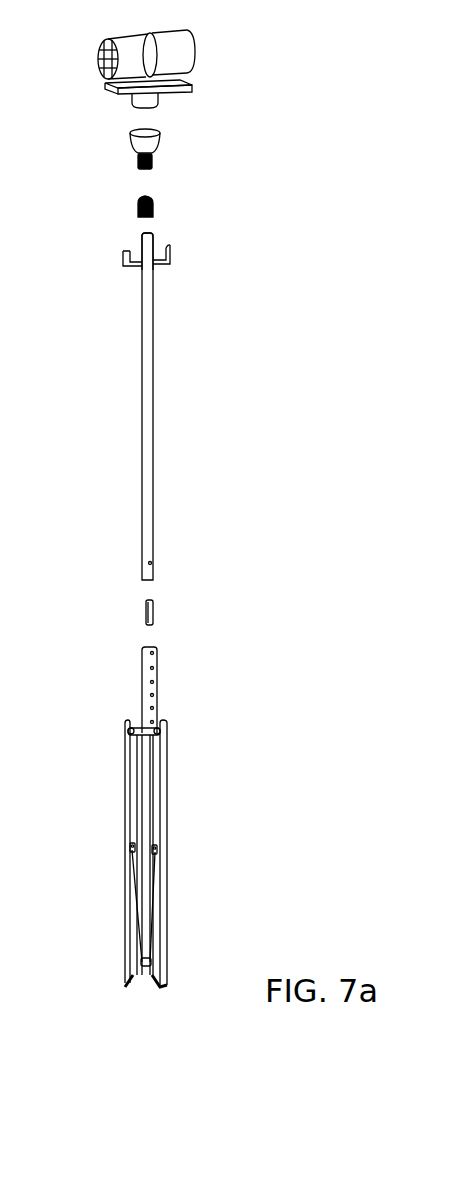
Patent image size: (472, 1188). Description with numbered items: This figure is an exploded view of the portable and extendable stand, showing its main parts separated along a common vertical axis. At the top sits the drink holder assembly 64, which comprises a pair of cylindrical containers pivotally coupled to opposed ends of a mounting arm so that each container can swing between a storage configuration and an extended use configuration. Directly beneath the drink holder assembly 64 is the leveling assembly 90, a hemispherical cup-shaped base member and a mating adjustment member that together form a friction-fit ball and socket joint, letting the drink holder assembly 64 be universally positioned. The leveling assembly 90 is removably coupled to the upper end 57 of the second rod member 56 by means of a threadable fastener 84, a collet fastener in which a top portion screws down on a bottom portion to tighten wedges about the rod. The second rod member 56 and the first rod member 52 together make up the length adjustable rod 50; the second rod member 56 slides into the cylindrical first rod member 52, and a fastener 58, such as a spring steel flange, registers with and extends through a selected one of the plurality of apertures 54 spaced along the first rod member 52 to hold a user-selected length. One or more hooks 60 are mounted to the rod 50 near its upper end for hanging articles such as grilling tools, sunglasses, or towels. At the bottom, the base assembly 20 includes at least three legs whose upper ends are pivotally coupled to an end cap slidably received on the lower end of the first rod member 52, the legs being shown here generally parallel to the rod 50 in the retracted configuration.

The base assembly 20 is at (205, 803).
The length adjustable rod 50 is at (252, 513).
The first rod member 52 is at (141, 683).
The apertures 54 is at (157, 695).
The second rod member 56 is at (147, 379).
The upper end of the second rod member 57 is at (153, 237).
The fastener 58 is at (155, 611).
The hooks 60 is at (171, 254).
The drink holder assembly 64 is at (213, 43).
The threadable fastener 84 is at (128, 165).
The leveling assembly 90 is at (165, 107).